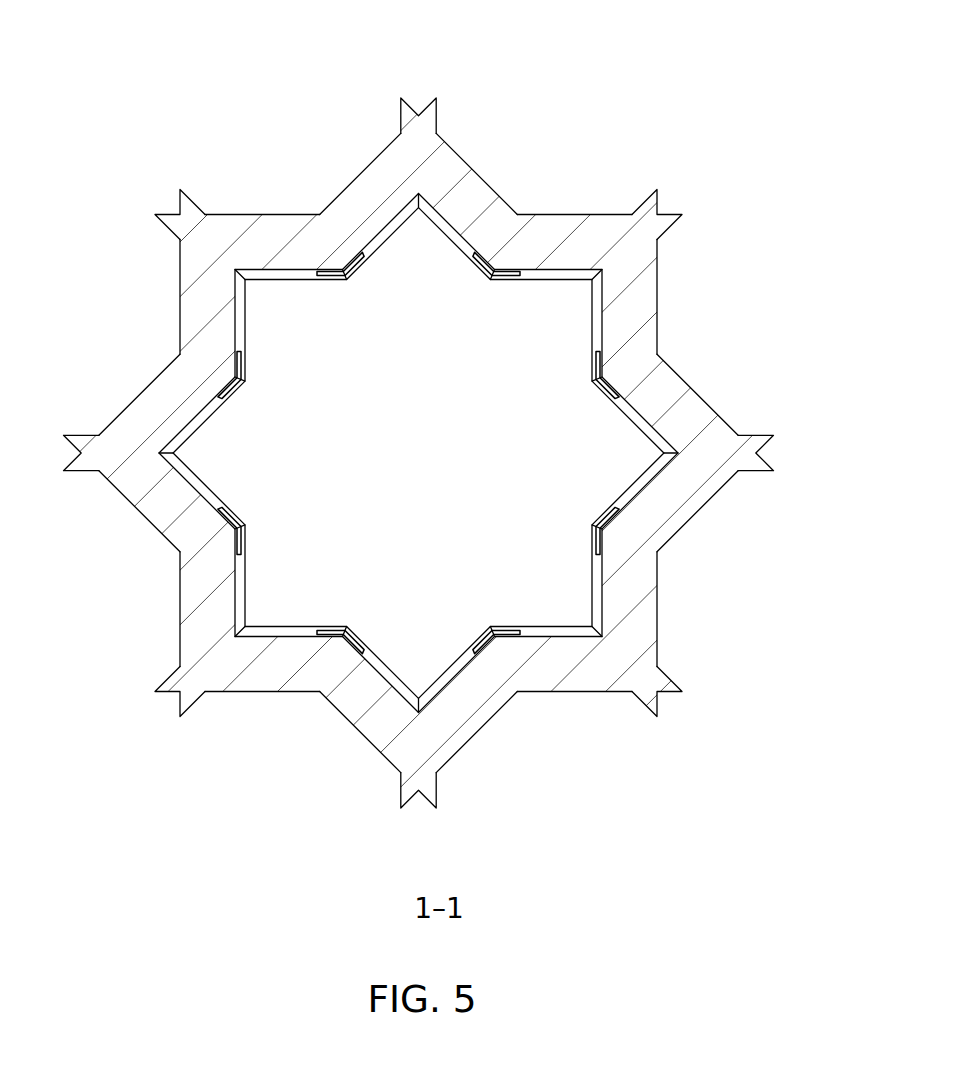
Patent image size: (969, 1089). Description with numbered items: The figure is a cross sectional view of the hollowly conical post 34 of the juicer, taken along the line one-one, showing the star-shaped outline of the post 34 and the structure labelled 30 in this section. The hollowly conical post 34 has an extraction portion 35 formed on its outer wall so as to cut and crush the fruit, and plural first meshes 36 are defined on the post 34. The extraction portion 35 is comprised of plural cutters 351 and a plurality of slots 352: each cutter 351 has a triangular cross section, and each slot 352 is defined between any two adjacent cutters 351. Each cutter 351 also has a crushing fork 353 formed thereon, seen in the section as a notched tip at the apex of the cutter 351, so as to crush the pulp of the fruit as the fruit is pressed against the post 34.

The heat dissipation frame assembly 30 is at (504, 547).
The hollowly conical post 34 is at (335, 723).
The extraction portion 35 is at (504, 547).
The first meshes 36 is at (348, 633).
The cutter 351 is at (428, 173).
The slot 352 is at (518, 212).
The crushing fork 353 is at (182, 192).